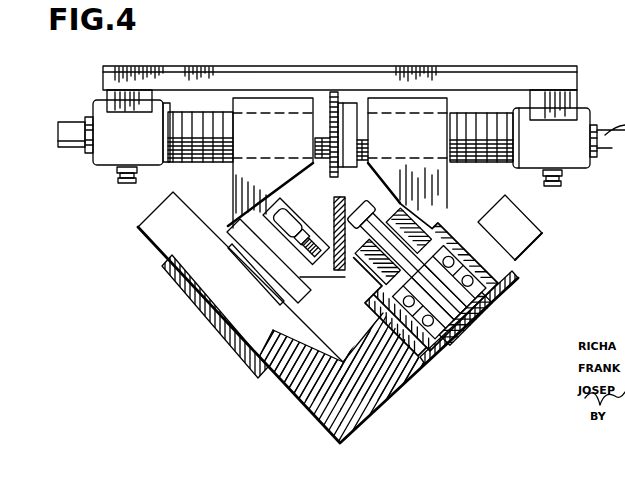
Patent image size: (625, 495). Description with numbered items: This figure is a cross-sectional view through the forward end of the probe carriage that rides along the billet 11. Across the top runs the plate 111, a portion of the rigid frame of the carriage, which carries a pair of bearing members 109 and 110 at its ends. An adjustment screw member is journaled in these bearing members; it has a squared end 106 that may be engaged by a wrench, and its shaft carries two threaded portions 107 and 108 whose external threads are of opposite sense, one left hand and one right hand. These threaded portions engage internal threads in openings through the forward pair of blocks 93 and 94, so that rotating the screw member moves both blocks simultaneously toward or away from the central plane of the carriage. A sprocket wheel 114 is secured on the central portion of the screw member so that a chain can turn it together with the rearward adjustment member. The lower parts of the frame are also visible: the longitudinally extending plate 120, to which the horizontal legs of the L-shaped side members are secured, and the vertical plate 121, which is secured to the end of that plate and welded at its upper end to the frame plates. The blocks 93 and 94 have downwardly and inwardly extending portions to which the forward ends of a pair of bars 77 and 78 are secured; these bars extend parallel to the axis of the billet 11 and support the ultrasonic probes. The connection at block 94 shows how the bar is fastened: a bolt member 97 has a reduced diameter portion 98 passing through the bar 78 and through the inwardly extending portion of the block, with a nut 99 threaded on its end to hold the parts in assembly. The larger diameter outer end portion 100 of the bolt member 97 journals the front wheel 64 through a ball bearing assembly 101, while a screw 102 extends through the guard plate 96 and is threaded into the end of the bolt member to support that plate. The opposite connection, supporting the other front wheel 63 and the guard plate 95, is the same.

The billet 11 is at (362, 413).
The front wheel 63 is at (232, 313).
The front wheel 64 is at (388, 380).
The bar 77 is at (235, 233).
The bar 78 is at (443, 228).
The block 93 is at (233, 178).
The block 94 is at (445, 185).
The guard plate 95 is at (188, 306).
The guard plate 96 is at (458, 340).
The bolt member 97 is at (460, 352).
The reduced diameter portion 98 is at (400, 282).
The nut 99 is at (390, 208).
The outer end portion 100 is at (510, 275).
The ball bearing assembly 101 is at (515, 260).
The screw 102 is at (473, 324).
The squared end 106 is at (72, 128).
The threaded portion 107 is at (185, 157).
The threaded portion 108 is at (507, 165).
The bearing member 109 is at (113, 157).
The bearing member 110 is at (575, 172).
The plate 111 is at (447, 73).
The sprocket wheel 114 is at (335, 92).
The longitudinally extending plate 120 is at (328, 202).
The vertical plate 121 is at (318, 278).